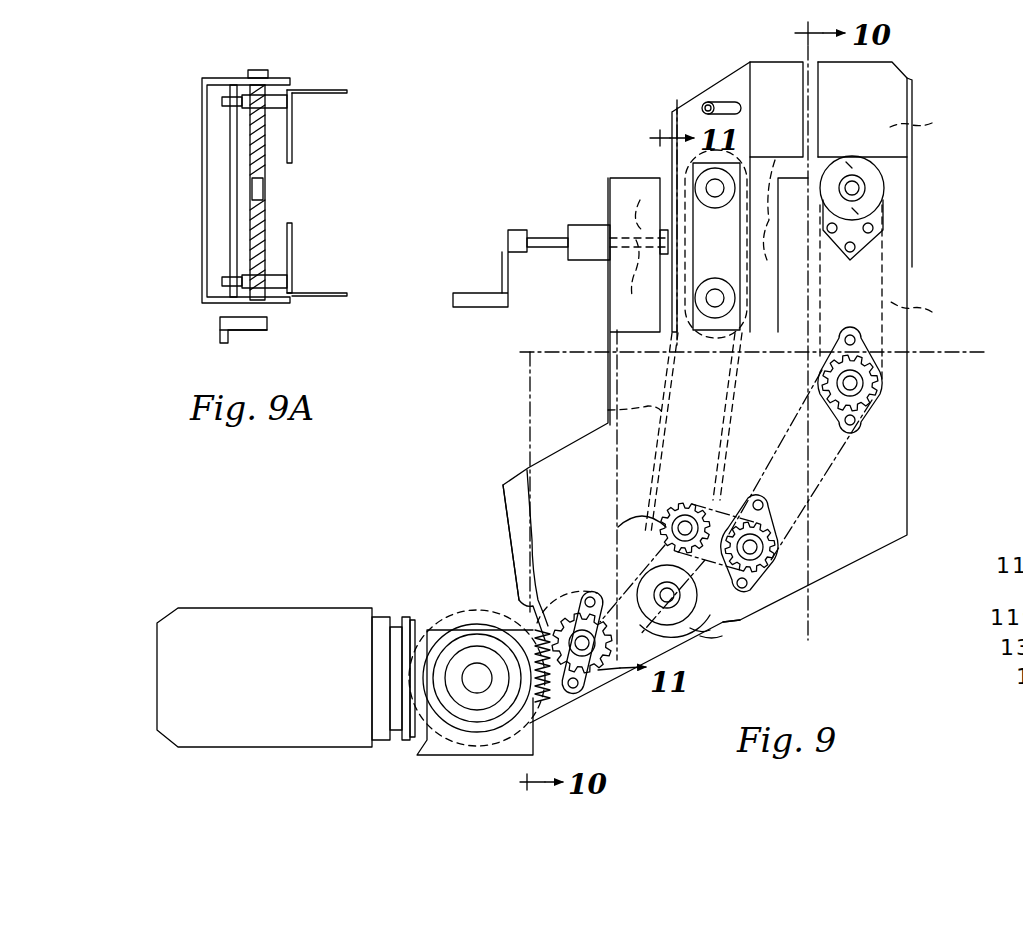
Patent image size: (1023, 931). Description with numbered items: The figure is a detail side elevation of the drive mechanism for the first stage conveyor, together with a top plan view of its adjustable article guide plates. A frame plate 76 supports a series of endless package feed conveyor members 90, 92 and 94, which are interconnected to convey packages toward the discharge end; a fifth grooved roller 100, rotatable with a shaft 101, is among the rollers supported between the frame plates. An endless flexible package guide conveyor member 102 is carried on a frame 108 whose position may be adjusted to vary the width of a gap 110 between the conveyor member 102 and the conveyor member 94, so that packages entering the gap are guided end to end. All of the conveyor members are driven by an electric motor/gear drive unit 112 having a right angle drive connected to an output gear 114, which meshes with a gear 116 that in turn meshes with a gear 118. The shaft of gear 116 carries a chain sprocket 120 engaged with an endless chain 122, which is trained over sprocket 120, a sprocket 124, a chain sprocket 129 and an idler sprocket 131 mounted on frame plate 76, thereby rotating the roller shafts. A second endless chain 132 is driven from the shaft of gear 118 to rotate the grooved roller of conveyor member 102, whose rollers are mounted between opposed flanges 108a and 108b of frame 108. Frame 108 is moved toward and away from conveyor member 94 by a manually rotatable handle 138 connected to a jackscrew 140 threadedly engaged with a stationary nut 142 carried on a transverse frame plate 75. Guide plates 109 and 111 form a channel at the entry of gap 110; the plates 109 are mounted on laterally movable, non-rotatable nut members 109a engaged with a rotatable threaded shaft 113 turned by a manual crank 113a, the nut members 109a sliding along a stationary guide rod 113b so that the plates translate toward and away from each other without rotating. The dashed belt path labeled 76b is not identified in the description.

In FIG. 9, the transverse frame plate 75 is at (636, 258).
In FIG. 9, the frame plate 76 is at (905, 345).
In FIG. 9, the belt 76b is at (762, 330).
In FIG. 9, the package feed conveyor member 90 is at (731, 626).
In FIG. 9, the package feed conveyor member 92 is at (850, 460).
In FIG. 9, the package feed conveyor member 94 is at (893, 246).
In FIG. 9, the grooved roller 100 is at (885, 170).
In FIG. 9, the shaft 101 is at (886, 190).
In FIG. 9, the package guide conveyor member 102 is at (648, 176).
In FIG. 9A, the frame 108 is at (192, 198).
In FIG. 9, the frame 108 is at (668, 110).
In FIG. 9A, the flange 108a is at (214, 78).
In FIG. 9A, the flange 108b is at (206, 318).
In FIG. 9A, the guide plate 109 is at (308, 90).
In FIG. 9, the guide plate 109 is at (770, 62).
In FIG. 9A, the nut member 109a is at (281, 110).
In FIG. 9A, the gap 110 is at (331, 228).
In FIG. 9, the gap 110 is at (746, 227).
In FIG. 9, the guide plate 111 is at (897, 65).
In FIG. 9, the electric motor/gear drive unit 112 is at (296, 606).
In FIG. 9A, the threaded shaft 113 is at (270, 168).
In FIG. 9A, the manual crank 113a is at (240, 330).
In FIG. 9, the manual crank 113a is at (710, 96).
In FIG. 9A, the guide rod 113b is at (230, 148).
In FIG. 9, the output gear 114 is at (548, 720).
In FIG. 9, the gear 116 is at (512, 585).
In FIG. 9, the gear 118 is at (702, 658).
In FIG. 9, the chain sprocket 120 is at (592, 698).
In FIG. 9, the endless chain 122 is at (814, 498).
In FIG. 9, the sprocket 124 is at (885, 392).
In FIG. 9, the chain sprocket 129 is at (780, 538).
In FIG. 9, the idler sprocket 131 is at (658, 510).
In FIG. 9, the endless chain 132 is at (608, 410).
In FIG. 9, the manually rotatable handle 138 is at (480, 308).
In FIG. 9, the jackscrew 140 is at (548, 248).
In FIG. 9, the stationary nut 142 is at (588, 224).